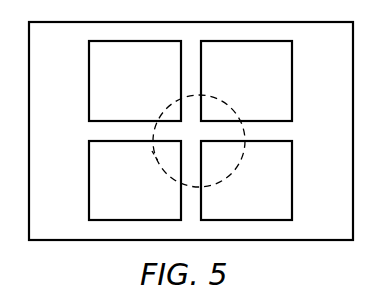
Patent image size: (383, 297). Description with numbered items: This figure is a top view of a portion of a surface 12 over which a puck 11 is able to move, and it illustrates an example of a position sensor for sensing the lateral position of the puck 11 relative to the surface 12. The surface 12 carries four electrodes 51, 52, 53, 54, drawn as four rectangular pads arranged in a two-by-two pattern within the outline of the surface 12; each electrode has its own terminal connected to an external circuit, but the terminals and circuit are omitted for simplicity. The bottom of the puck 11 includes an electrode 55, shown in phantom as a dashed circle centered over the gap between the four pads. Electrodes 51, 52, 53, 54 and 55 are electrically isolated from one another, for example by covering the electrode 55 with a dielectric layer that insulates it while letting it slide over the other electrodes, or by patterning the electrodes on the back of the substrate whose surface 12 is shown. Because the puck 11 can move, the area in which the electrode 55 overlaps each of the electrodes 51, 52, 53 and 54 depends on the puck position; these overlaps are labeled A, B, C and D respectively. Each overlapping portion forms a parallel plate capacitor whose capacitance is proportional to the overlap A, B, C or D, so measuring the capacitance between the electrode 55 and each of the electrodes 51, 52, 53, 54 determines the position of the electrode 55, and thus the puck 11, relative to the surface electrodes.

The puck 11 is at (232, 108).
The surface 12 is at (88, 240).
The electrode 51 is at (89, 81).
The electrode 52 is at (292, 81).
The electrode 53 is at (89, 181).
The electrode 54 is at (292, 181).
The electrode 55 is at (155, 160).
The overlap A is at (175, 107).
The overlap B is at (212, 106).
The overlap C is at (163, 167).
The overlap D is at (232, 160).